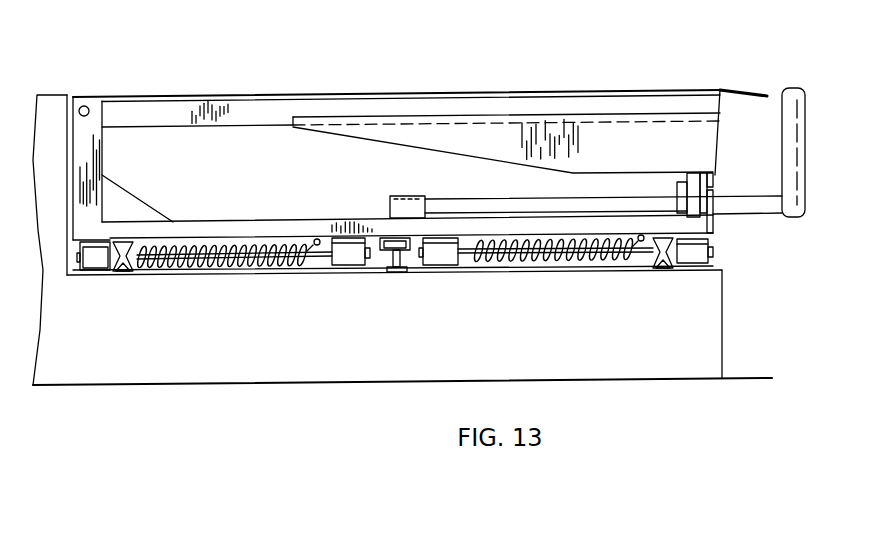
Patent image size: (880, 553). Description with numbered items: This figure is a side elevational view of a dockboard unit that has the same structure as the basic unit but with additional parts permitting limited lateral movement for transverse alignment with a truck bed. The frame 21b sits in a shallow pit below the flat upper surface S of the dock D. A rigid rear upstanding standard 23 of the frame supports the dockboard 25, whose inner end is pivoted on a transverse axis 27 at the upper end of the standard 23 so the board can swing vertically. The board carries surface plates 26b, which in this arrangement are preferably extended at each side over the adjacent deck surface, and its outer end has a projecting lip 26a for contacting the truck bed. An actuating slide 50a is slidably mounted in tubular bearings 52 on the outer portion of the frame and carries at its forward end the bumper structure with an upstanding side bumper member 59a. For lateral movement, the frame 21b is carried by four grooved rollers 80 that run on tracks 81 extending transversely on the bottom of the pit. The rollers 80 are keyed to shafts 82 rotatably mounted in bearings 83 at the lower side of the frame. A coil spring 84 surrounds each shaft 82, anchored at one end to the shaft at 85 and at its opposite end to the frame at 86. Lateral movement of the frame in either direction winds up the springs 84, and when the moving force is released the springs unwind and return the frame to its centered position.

The upper surface of dock S is at (58, 95).
The dock D is at (208, 376).
The dockboard 25 is at (275, 104).
The surface plates 26b is at (378, 96).
The lip 26a is at (732, 91).
The transverse pivot axis 27 is at (88, 107).
The dockboard-supporting standard 23 is at (94, 140).
The frame 21b is at (349, 221).
The tubular bearings 52 is at (404, 200).
The actuating slide 50a is at (763, 206).
The upstanding side bumper member 59a is at (787, 140).
The grooved rollers 80 is at (136, 245).
The tracks 81 is at (128, 272).
The shafts 82 is at (320, 257).
The bearings 83 is at (97, 264).
The coil spring 84 is at (212, 246).
The spring anchor on shaft 85 is at (152, 260).
The spring anchor on frame 86 is at (313, 240).